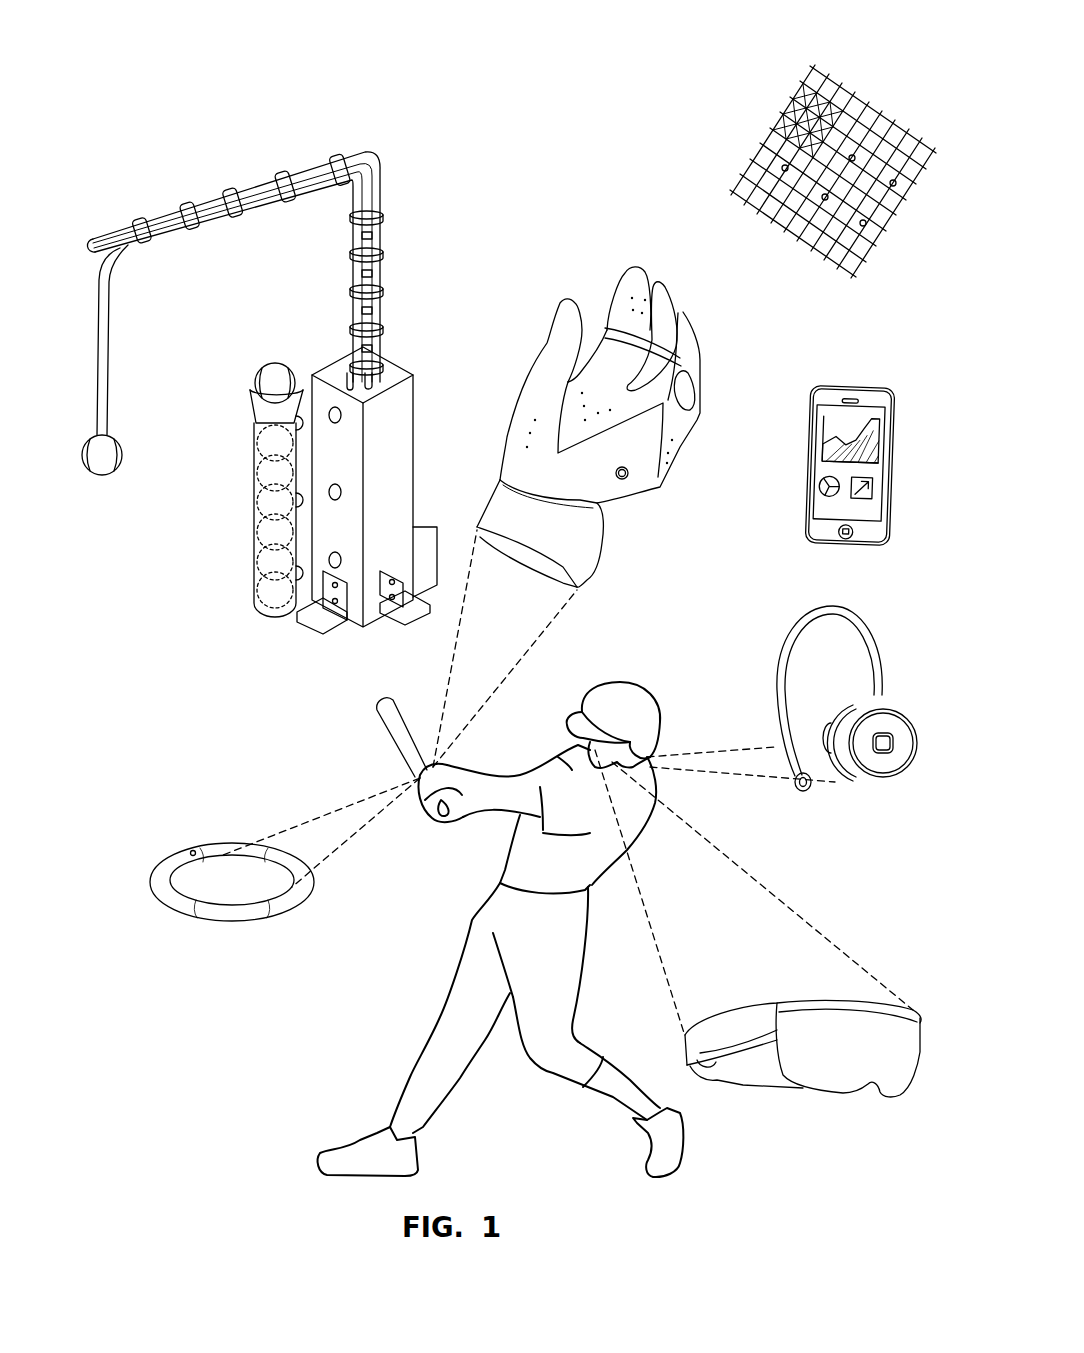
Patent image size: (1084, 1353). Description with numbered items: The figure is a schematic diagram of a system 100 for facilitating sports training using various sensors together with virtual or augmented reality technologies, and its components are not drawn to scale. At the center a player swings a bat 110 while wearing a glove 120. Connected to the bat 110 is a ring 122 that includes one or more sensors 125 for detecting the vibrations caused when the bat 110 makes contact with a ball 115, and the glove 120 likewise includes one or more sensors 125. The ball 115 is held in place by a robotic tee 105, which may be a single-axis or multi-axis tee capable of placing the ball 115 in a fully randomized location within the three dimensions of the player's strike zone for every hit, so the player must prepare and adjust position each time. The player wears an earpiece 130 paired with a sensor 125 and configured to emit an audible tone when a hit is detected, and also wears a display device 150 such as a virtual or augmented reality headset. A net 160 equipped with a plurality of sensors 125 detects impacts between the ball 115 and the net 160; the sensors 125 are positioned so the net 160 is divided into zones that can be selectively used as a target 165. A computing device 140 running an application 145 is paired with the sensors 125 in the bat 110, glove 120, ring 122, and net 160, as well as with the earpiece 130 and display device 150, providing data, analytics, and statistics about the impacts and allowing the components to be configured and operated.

The system 100 is at (500, 140).
The robotic tee 105 is at (255, 177).
The bat 110 is at (388, 731).
The ball 115 is at (110, 438).
The glove 120 is at (683, 310).
The ring 122 is at (228, 921).
The sensors 125 is at (622, 480).
The earpiece 130 is at (893, 697).
The computing device 140 is at (803, 528).
The application 145 is at (823, 470).
The display device 150 is at (823, 1091).
The net 160 is at (747, 163).
The target 165 is at (787, 113).